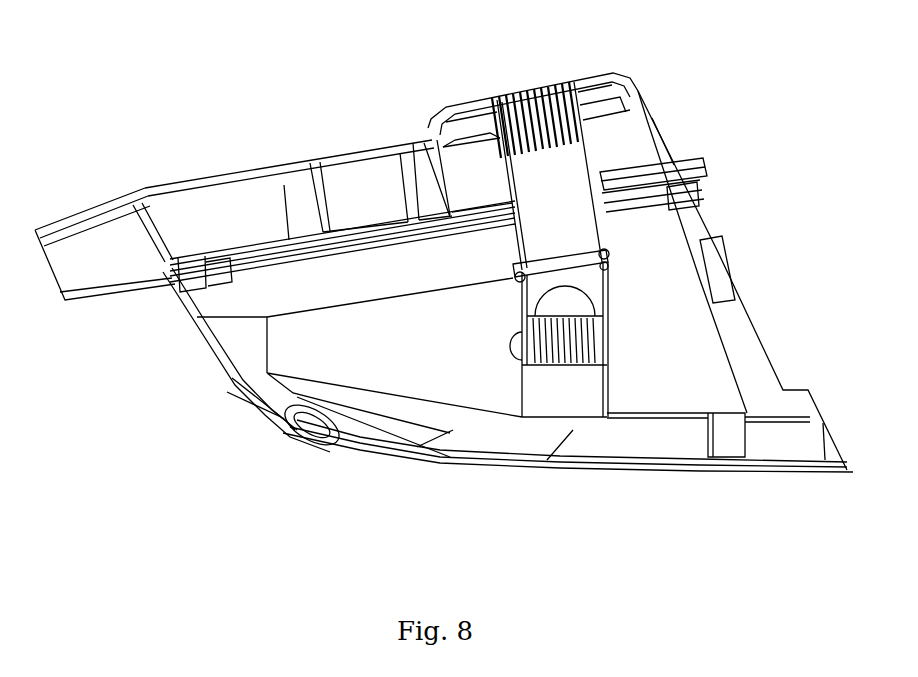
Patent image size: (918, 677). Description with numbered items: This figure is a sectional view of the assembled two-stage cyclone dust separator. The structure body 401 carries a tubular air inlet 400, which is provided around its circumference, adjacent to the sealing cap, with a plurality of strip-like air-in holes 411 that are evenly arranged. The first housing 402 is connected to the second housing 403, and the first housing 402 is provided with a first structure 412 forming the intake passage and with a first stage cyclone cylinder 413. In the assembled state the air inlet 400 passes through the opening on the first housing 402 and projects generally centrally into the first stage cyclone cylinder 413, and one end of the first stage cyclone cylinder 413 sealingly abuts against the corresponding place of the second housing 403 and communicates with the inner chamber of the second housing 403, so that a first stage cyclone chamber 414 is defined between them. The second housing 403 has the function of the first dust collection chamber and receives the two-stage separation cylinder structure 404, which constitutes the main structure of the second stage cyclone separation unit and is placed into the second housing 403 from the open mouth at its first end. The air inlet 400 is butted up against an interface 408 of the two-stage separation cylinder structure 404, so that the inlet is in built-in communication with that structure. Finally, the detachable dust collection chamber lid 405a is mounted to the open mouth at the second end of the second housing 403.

The air inlet 400 is at (667, 162).
The structure body 401 is at (470, 117).
The first housing 402 is at (288, 197).
The second housing 403 is at (600, 463).
The two-stage separation cylinder structure 404 is at (456, 348).
The dust collection chamber lid 405a is at (217, 370).
The interface 408 is at (607, 262).
The air-in holes 411 is at (572, 90).
The first structure 412 is at (110, 207).
The first stage cyclone cylinder 413 is at (653, 152).
The first stage cyclone chamber 414 is at (607, 155).